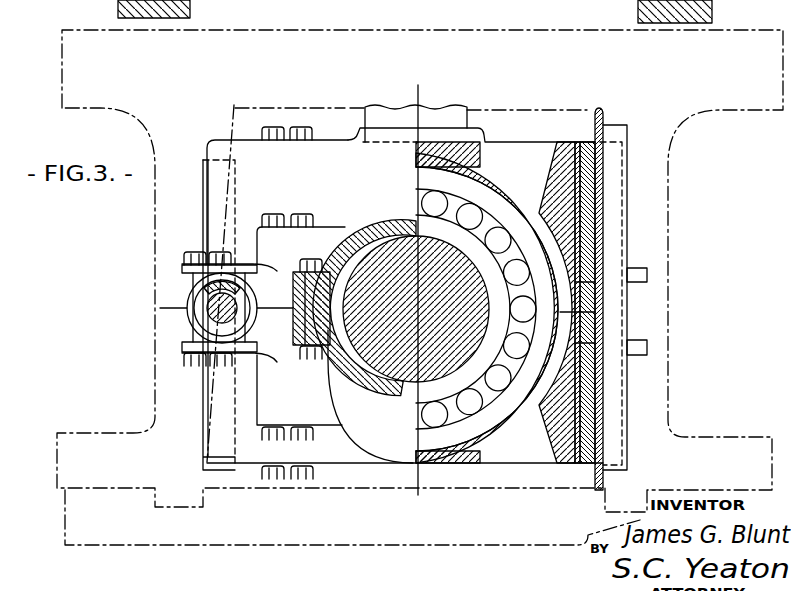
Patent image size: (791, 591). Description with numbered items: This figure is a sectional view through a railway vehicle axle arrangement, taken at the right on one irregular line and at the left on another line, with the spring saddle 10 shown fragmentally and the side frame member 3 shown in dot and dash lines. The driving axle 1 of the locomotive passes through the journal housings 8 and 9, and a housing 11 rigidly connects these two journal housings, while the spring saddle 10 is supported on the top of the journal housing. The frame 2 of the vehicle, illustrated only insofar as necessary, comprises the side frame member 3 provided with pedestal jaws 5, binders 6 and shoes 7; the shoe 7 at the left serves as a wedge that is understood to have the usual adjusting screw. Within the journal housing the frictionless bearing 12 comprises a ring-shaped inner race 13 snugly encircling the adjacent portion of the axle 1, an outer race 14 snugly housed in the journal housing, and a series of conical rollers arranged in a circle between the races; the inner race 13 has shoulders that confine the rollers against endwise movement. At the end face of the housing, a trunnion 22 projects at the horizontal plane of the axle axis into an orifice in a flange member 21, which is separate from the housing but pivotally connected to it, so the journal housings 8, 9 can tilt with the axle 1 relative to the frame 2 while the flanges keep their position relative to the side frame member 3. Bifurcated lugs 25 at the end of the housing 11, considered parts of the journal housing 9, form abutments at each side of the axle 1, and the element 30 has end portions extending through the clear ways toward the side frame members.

The driving axle 1 is at (400, 388).
The frame 2 is at (461, 44).
The side frame member 3 is at (415, 11).
The pedestal jaw 5 is at (337, 117).
The binder 6 is at (392, 433).
The shoe 7 is at (223, 472).
The journal housing 8 is at (513, 180).
The journal housing 9 is at (258, 152).
The spring saddle 10 is at (437, 112).
The housing 11 is at (347, 373).
The frictionless bearing 12 is at (476, 322).
The inner race 13 is at (427, 217).
The outer race 14 is at (435, 180).
The flange member 21 is at (590, 220).
The trunnion 22 is at (593, 303).
The bifurcated lug 25 is at (185, 342).
The pin 30 is at (190, 291).